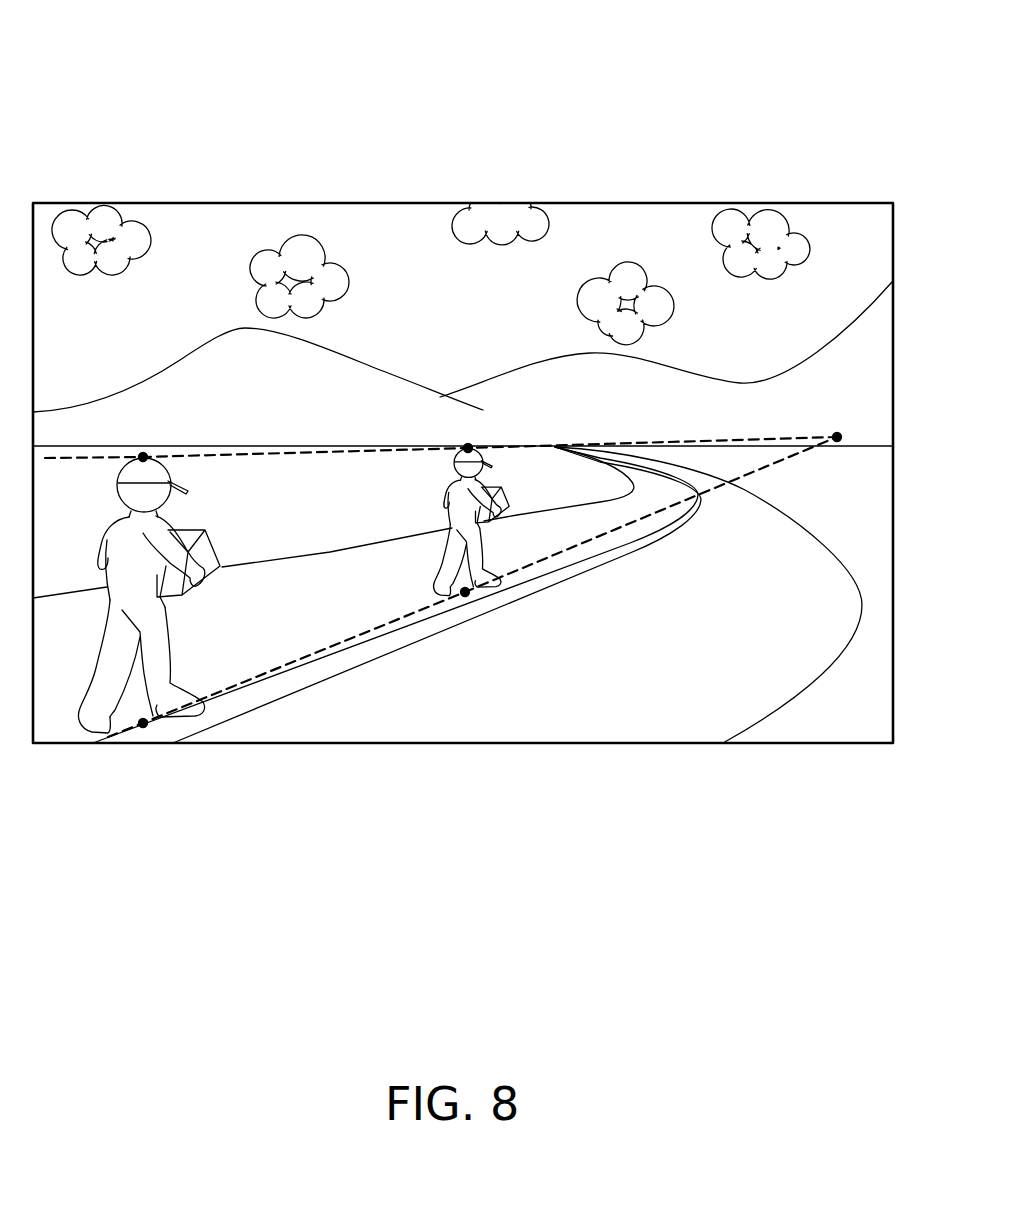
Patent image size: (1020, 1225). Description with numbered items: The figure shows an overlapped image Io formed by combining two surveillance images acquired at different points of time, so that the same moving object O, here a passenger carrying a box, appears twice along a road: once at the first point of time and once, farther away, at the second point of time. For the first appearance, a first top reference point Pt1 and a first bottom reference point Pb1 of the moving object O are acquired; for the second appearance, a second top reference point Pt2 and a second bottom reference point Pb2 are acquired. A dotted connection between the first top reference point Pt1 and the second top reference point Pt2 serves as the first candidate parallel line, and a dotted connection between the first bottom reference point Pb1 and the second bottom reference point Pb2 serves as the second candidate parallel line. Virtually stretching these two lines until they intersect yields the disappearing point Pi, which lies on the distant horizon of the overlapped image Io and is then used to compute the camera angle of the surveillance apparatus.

The overlapped image Io is at (760, 95).
The moving object O is at (158, 637).
The first top reference point Pt1 is at (143, 457).
The first bottom reference point Pb1 is at (143, 727).
The second top reference point Pt2 is at (468, 448).
The second bottom reference point Pb2 is at (465, 597).
The intersection point (vanishing point) Pi is at (837, 437).